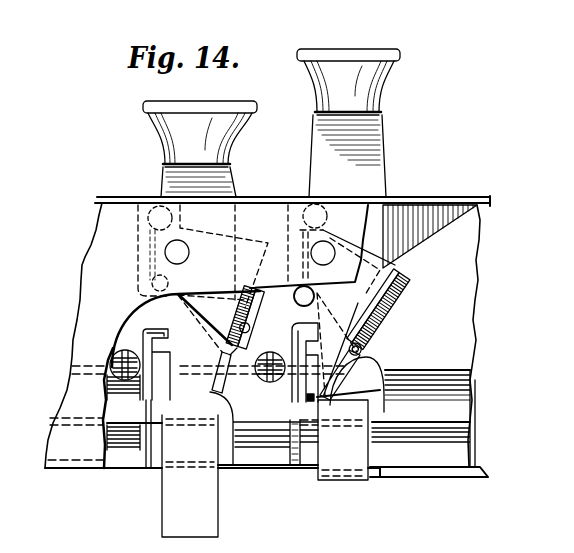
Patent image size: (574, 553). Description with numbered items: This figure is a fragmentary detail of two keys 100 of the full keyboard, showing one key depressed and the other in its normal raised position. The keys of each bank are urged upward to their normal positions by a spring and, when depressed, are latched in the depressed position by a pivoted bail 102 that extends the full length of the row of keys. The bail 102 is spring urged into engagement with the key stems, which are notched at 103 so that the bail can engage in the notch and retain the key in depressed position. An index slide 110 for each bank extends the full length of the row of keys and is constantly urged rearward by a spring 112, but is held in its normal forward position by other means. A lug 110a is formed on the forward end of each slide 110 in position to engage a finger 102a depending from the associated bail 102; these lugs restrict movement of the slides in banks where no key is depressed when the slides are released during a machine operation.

The keys 100 is at (327, 53).
The pivoted bail 102 is at (253, 247).
The notch 103 is at (396, 275).
The index slide 110 is at (130, 340).
The spring 112 is at (113, 346).
The lug 110a is at (300, 402).
The finger 102a is at (372, 394).